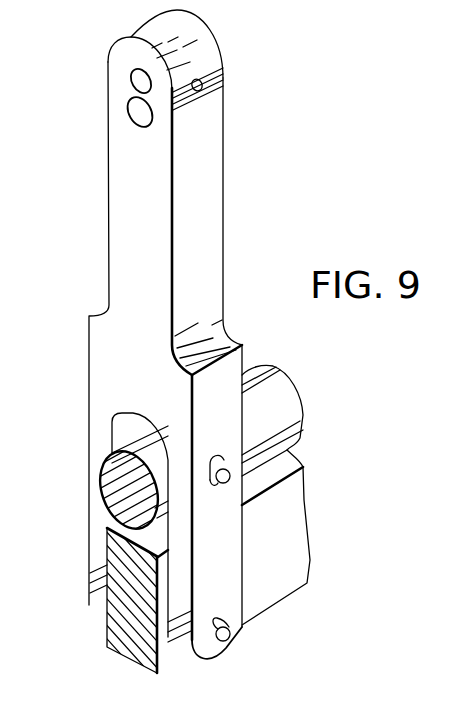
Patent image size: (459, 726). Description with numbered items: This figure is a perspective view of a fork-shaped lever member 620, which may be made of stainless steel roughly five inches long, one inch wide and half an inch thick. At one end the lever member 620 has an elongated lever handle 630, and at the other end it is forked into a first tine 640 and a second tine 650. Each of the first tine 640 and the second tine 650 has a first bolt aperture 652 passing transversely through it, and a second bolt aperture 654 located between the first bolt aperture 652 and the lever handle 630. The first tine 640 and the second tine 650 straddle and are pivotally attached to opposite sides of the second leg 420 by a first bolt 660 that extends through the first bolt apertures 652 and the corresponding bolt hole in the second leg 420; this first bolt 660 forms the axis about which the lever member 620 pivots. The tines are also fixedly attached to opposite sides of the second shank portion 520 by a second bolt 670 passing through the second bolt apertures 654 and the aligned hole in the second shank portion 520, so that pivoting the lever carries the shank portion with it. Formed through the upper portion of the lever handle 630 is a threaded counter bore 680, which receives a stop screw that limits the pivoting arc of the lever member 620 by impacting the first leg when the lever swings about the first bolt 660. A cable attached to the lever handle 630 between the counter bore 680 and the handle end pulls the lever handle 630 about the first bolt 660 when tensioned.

The lever member 620 is at (238, 117).
The lever handle 630 is at (212, 45).
The threaded counter bore 680 is at (137, 115).
The second shank portion 520 is at (108, 478).
The second tine 650 is at (95, 518).
The second leg 420 is at (287, 583).
The second bolt aperture 654 is at (219, 457).
The second bolt 670 is at (221, 490).
The first bolt aperture 652 is at (220, 618).
The first bolt 660 is at (230, 638).
The first tine 640 is at (213, 650).